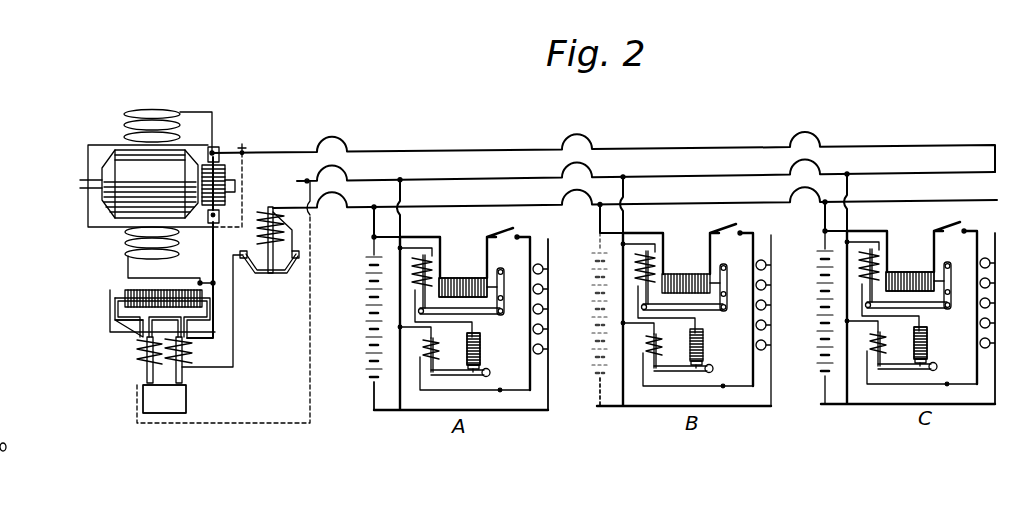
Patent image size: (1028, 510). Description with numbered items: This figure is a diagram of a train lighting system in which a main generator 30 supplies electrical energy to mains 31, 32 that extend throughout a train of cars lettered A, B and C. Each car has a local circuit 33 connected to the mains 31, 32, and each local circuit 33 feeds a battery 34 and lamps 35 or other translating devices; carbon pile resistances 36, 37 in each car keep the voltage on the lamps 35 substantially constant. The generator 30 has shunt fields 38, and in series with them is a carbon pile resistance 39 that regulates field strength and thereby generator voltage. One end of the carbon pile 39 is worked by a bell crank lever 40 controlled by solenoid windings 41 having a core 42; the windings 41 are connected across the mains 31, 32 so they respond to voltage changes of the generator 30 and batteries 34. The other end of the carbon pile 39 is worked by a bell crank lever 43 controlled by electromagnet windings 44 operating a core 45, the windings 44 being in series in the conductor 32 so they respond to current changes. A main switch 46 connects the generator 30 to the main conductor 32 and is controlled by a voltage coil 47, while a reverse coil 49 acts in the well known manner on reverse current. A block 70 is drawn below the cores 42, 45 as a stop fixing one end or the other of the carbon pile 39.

The main generator 30 is at (166, 170).
The main 31 is at (462, 150).
The main 32 is at (742, 203).
The local circuit 33 is at (372, 223).
The battery 34 is at (366, 318).
The lamps 35 is at (544, 333).
The carbon pile resistance 36 is at (456, 282).
The carbon pile resistance 37 is at (481, 348).
The shunt fields 38 is at (126, 120).
The carbon pile resistance 39 is at (126, 296).
The bell crank lever 40 is at (140, 322).
The solenoid windings 41 is at (146, 366).
The core 42 is at (150, 378).
The bell crank lever 43 is at (211, 312).
The electromagnet windings 44 is at (190, 351).
The core 45 is at (184, 379).
The main switch 46 is at (268, 274).
The voltage coil 47 is at (288, 237).
The reverse coil 49 is at (268, 210).
The resistance 70 is at (165, 410).